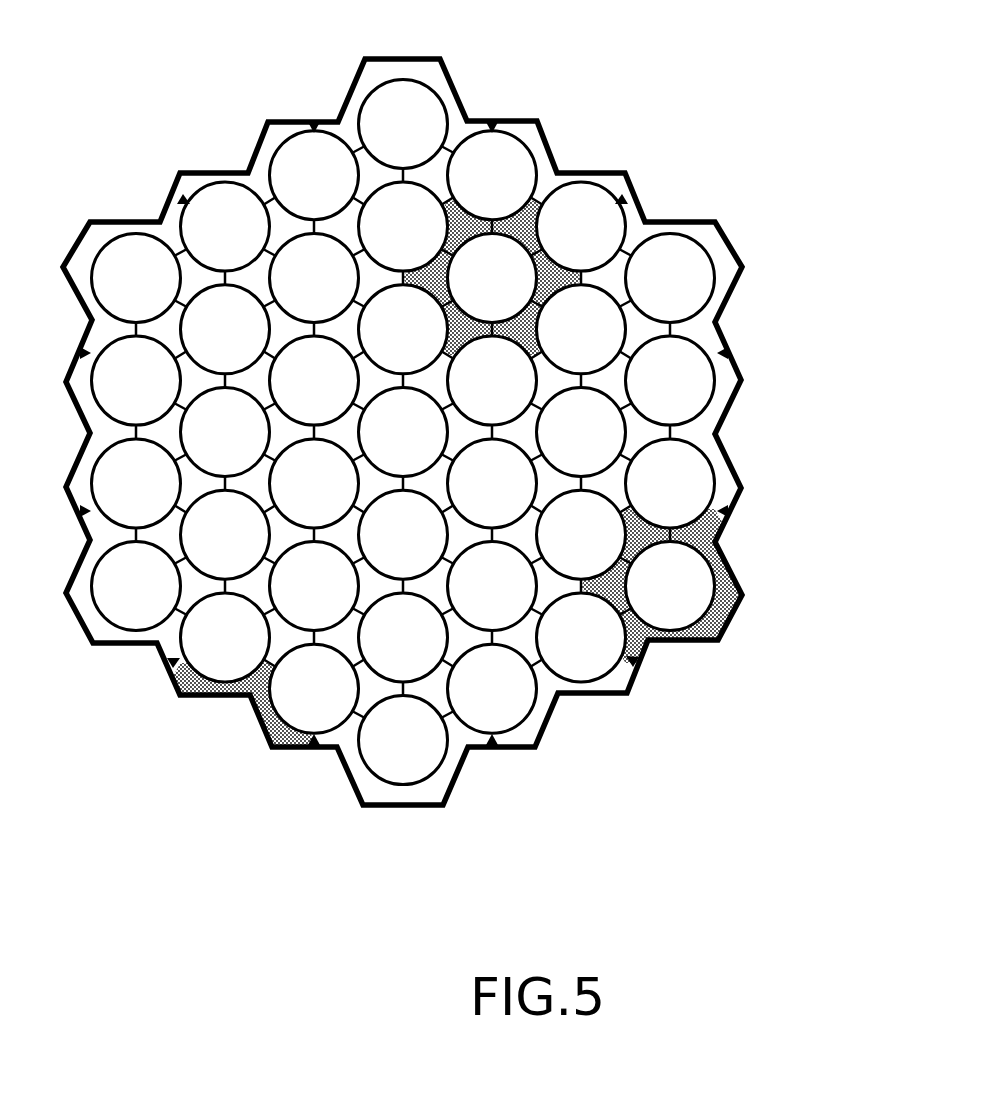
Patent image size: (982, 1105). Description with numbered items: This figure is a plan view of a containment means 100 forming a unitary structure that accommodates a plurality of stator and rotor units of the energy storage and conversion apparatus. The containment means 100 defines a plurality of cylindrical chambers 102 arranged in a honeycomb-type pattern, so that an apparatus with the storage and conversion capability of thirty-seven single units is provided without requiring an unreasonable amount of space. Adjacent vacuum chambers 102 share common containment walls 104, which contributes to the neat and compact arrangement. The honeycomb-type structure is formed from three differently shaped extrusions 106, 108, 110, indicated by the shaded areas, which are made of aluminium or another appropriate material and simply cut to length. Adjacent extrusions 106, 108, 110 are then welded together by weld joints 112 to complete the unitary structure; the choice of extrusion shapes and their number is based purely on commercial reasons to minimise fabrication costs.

The containment means 100 is at (606, 136).
The chambers 102 is at (680, 300).
The common containment walls 104 is at (580, 383).
The extrusion 106 is at (522, 236).
The extrusion 108 is at (716, 629).
The extrusion 110 is at (256, 702).
The weld joints 112 is at (268, 197).